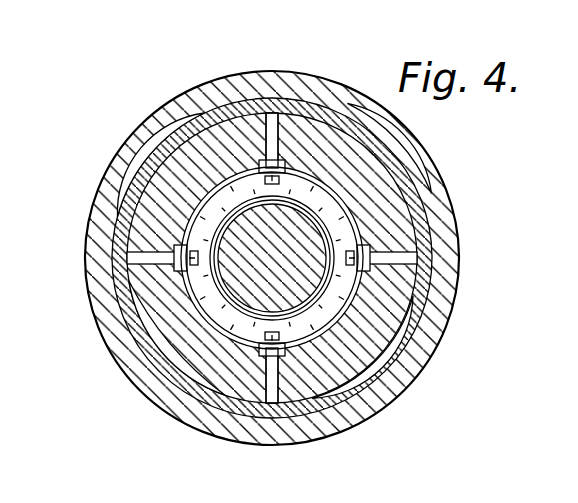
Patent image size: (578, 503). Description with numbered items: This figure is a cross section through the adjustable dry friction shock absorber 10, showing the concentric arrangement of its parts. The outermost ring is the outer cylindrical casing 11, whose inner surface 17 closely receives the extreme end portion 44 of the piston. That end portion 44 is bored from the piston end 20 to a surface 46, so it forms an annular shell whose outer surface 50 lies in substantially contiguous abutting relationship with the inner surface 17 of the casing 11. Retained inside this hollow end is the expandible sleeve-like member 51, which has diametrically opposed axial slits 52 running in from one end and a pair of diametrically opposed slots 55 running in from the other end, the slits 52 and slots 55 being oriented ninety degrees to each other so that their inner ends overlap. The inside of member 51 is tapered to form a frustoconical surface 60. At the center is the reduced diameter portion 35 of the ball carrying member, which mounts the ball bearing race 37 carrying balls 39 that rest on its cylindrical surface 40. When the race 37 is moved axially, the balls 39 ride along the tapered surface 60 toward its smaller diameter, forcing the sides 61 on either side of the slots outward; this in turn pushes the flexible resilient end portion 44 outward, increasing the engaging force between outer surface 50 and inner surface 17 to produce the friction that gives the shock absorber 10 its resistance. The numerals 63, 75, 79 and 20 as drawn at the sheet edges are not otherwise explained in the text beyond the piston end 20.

The adjustable dry friction shock absorber 10 is at (427, 150).
The outer cylindrical casing 11 is at (384, 408).
The inner surface of casing 17 is at (190, 130).
The end of piston 20 is at (2, 121).
The reduced diameter portion 35 is at (428, 309).
The ball bearing race 37 is at (312, 168).
The balls 39 is at (147, 321).
The cylindrical surface 40 is at (263, 318).
The extreme end portion of piston 44 is at (425, 214).
The surface 46 is at (405, 490).
The outer surface of shell 50 is at (143, 377).
The expandible sleeve-like member 51 is at (412, 186).
The axial slits 52 is at (298, 122).
The slots 55 is at (160, 278).
The frustoconical surface 60 is at (130, 170).
The sides 61 is at (130, 193).
The flange 63 is at (12, 191).
The seal 75 is at (247, 103).
The retainer 79 is at (158, 388).